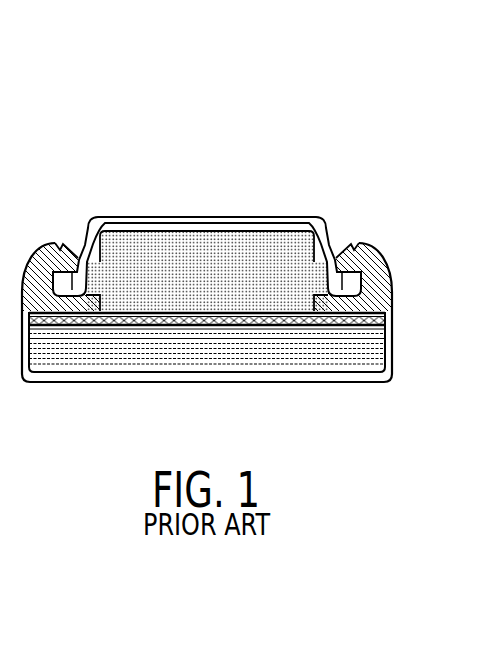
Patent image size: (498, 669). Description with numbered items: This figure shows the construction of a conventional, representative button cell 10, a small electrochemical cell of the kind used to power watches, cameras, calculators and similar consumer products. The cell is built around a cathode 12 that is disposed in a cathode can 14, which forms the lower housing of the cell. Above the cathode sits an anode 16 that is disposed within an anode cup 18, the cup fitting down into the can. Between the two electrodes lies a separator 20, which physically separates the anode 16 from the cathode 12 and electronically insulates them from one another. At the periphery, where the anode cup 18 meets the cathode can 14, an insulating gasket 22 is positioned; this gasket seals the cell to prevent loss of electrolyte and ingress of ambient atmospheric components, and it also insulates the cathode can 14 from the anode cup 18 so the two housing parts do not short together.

The button cell 10 is at (126, 92).
The cathode 12 is at (78, 362).
The cathode can 14 is at (320, 383).
The anode 16 is at (195, 240).
The anode cup 18 is at (102, 217).
The separator 20 is at (184, 316).
The insulating gasket 22 is at (342, 248).